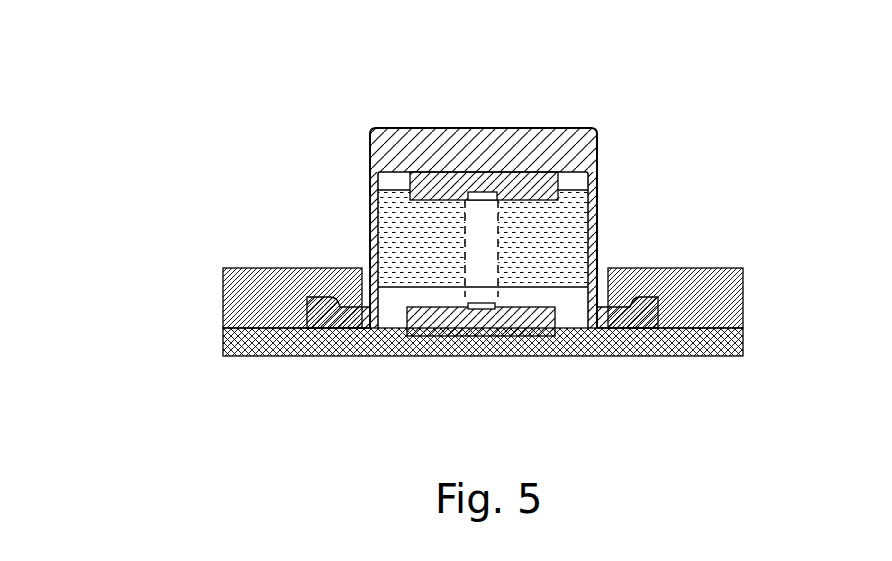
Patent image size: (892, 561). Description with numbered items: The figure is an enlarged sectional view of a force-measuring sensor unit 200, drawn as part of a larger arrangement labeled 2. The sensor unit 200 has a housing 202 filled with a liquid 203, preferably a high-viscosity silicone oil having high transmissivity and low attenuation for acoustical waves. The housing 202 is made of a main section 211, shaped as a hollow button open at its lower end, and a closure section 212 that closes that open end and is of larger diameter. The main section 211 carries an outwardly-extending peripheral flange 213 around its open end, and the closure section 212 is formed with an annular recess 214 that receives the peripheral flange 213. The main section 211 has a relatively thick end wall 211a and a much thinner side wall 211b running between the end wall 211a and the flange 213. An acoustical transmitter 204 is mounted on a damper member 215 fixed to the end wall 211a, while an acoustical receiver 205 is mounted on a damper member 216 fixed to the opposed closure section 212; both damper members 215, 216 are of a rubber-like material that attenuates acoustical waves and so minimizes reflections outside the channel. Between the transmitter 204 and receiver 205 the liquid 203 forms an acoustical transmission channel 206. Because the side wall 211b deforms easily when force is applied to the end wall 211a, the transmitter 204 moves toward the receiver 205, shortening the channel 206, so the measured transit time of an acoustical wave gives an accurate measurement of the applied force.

The sensor device 2 is at (185, 208).
The sensor unit 200 is at (217, 147).
The housing 202 is at (488, 125).
The liquid 203 is at (580, 208).
The acoustical transmitter 204 is at (478, 202).
The acoustical receiver 205 is at (477, 309).
The acoustical transmission channel 206 is at (498, 246).
The main section 211 is at (432, 169).
The end wall 211a is at (390, 128).
The side wall 211b is at (370, 227).
The closure section 212 is at (243, 293).
The peripheral flange 213 is at (336, 322).
The annular recess 214 is at (315, 313).
The damper member 215 is at (523, 182).
The damper member 216 is at (483, 333).